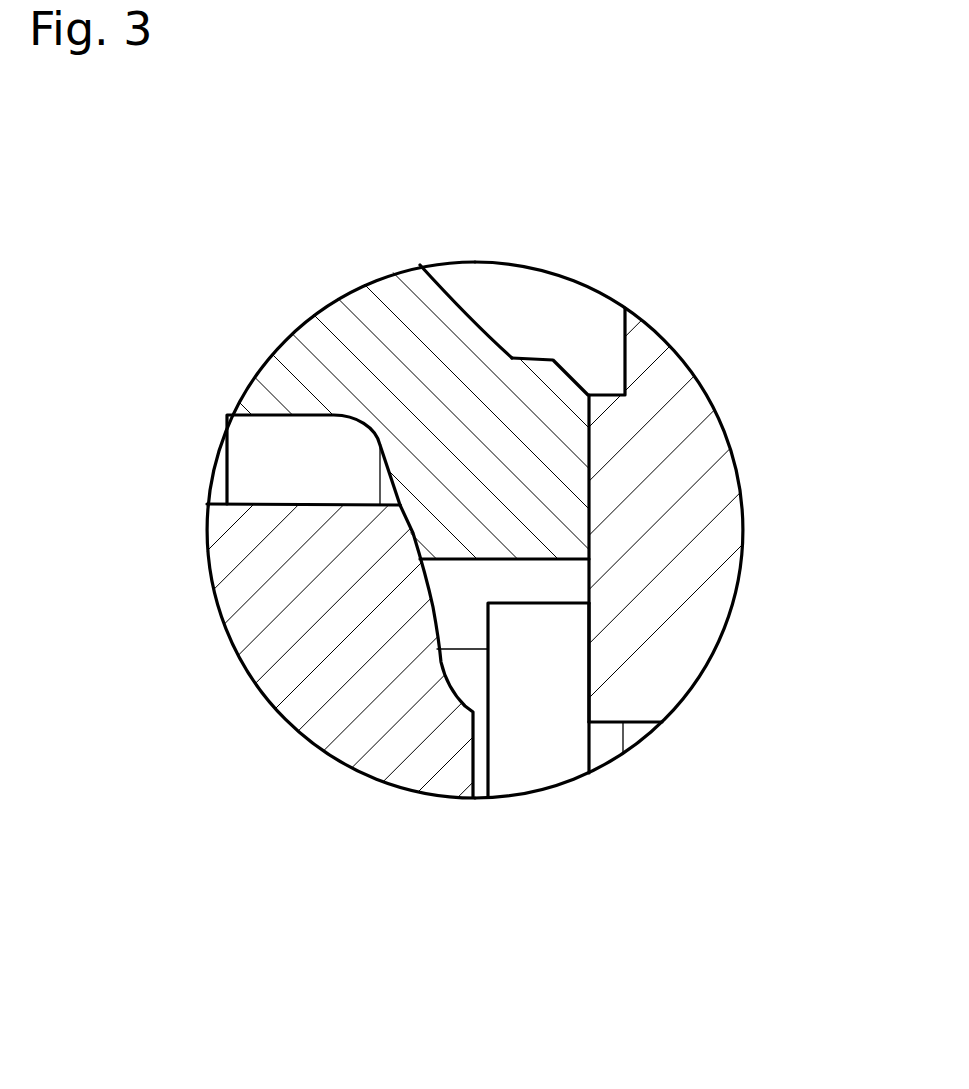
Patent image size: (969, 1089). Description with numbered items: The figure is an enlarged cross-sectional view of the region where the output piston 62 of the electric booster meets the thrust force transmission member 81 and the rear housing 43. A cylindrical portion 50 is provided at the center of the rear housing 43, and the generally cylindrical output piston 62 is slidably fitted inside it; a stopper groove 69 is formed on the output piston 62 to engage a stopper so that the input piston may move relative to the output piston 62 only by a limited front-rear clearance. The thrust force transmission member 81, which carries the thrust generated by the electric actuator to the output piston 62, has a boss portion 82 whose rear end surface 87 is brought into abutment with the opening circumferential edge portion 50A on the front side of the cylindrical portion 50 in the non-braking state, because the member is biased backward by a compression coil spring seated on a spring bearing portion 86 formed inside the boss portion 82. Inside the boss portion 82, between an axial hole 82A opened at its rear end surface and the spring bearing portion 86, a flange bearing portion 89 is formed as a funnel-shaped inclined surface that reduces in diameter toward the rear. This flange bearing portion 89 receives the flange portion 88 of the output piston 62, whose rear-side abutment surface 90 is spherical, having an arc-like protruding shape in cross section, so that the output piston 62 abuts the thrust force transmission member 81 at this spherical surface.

The rear housing 43 is at (672, 321).
The cylindrical portion 50 is at (653, 648).
The opening circumferential edge portion 50A is at (590, 680).
The output piston 62 is at (261, 712).
The stopper groove 69 is at (473, 738).
The thrust force transmission member 81 is at (455, 289).
The boss portion 82 is at (535, 393).
The axial hole 82A is at (540, 558).
The spring bearing portion 86 is at (227, 468).
The rear end surface 87 is at (590, 447).
The flange portion 88 is at (268, 557).
The flange bearing portion 89 is at (380, 468).
The abutment surface 90 is at (430, 597).